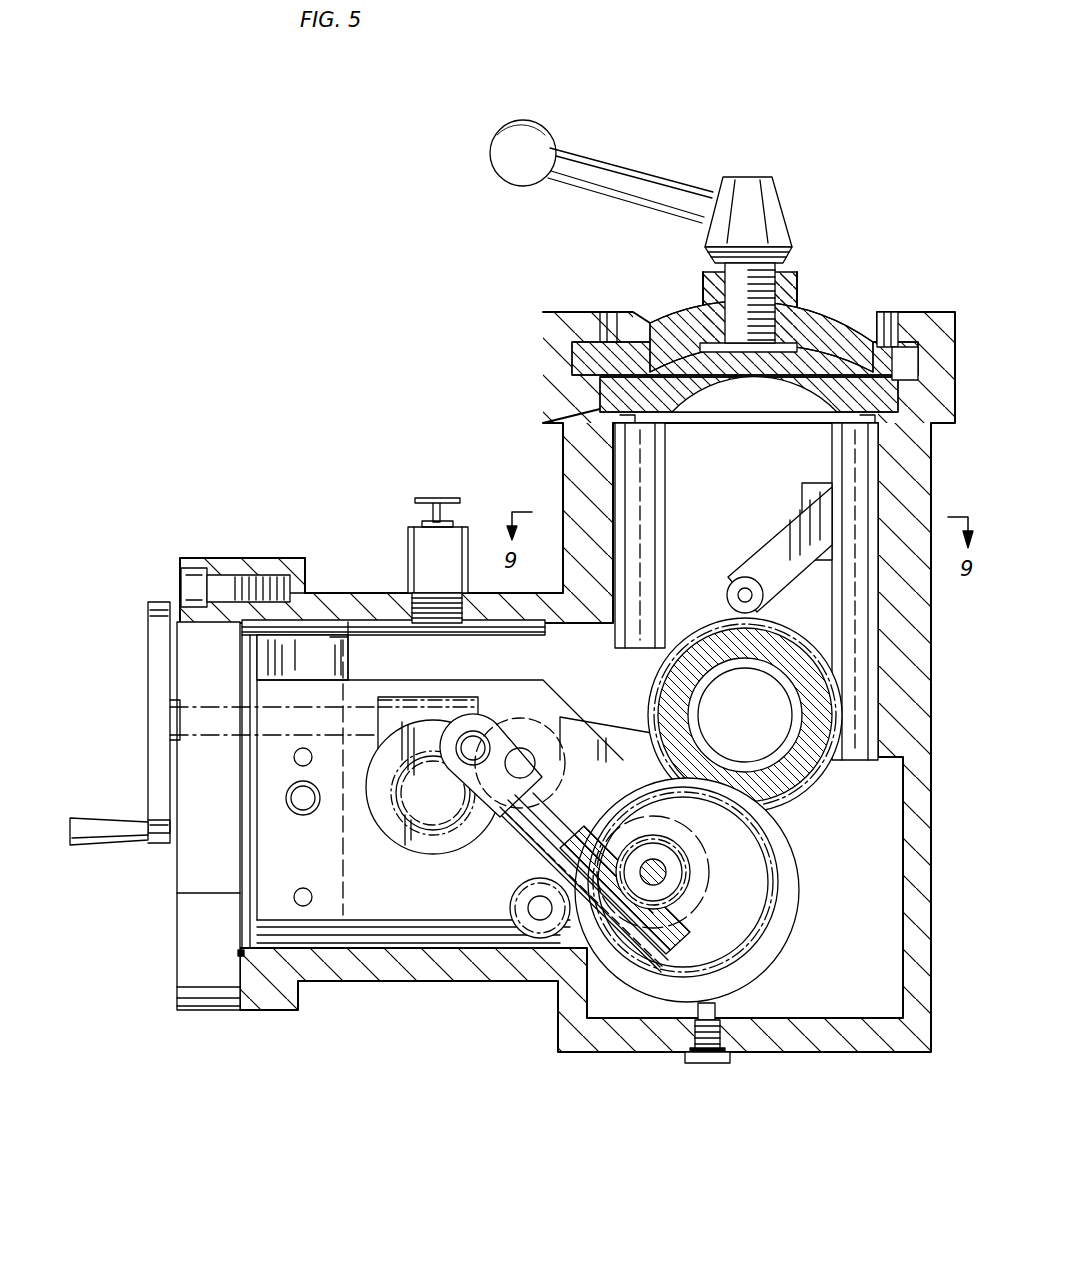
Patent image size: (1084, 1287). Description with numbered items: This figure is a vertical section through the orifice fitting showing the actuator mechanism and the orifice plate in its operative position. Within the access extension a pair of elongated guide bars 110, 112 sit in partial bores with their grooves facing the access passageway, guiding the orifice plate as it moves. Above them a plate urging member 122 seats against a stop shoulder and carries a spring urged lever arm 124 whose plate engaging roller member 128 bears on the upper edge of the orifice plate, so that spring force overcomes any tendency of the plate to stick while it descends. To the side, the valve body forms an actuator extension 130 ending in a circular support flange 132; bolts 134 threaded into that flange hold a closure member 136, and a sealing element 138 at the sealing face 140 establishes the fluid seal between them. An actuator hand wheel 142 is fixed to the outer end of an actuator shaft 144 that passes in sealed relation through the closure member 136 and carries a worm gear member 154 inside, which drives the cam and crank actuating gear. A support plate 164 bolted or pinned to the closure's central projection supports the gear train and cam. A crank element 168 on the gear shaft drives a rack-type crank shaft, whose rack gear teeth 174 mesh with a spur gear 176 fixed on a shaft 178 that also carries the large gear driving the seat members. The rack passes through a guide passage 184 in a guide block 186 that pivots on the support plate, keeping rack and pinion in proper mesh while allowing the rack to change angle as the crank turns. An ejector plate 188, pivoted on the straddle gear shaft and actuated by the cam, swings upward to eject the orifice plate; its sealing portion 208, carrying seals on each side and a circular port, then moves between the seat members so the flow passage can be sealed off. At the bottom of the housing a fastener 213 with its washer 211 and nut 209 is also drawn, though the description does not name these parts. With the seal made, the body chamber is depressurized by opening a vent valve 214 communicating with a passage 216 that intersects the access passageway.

The guide bar 110 is at (628, 527).
The guide bar 112 is at (858, 488).
The plate urging member 122 is at (828, 487).
The spring urged lever arm 124 is at (793, 548).
The plate engaging roller member 128 is at (737, 583).
The actuator extension 130 is at (335, 592).
The circular support flange 132 is at (275, 560).
The bolts 134 is at (218, 567).
The closure member 136 is at (178, 921).
The sealing element 138 is at (238, 953).
The sealing face 140 is at (233, 990).
The actuator hand wheel 142 is at (147, 630).
The actuator shaft 144 is at (172, 720).
The worm gear member 154 is at (412, 697).
The support plate 164 is at (432, 915).
The crank element 168 is at (408, 838).
The rack gear teeth 174 is at (640, 968).
The spur gear 176 is at (677, 895).
The shaft 178 is at (658, 870).
The guide passage 184 is at (587, 900).
The guide block 186 is at (536, 938).
The ejector plate 188 is at (624, 733).
The sealing portion 208 is at (795, 928).
The nut 209 is at (722, 1064).
The washer 211 is at (697, 1064).
The bolt 213 is at (718, 1010).
The vent valve 214 is at (408, 540).
The passage 216 is at (436, 603).